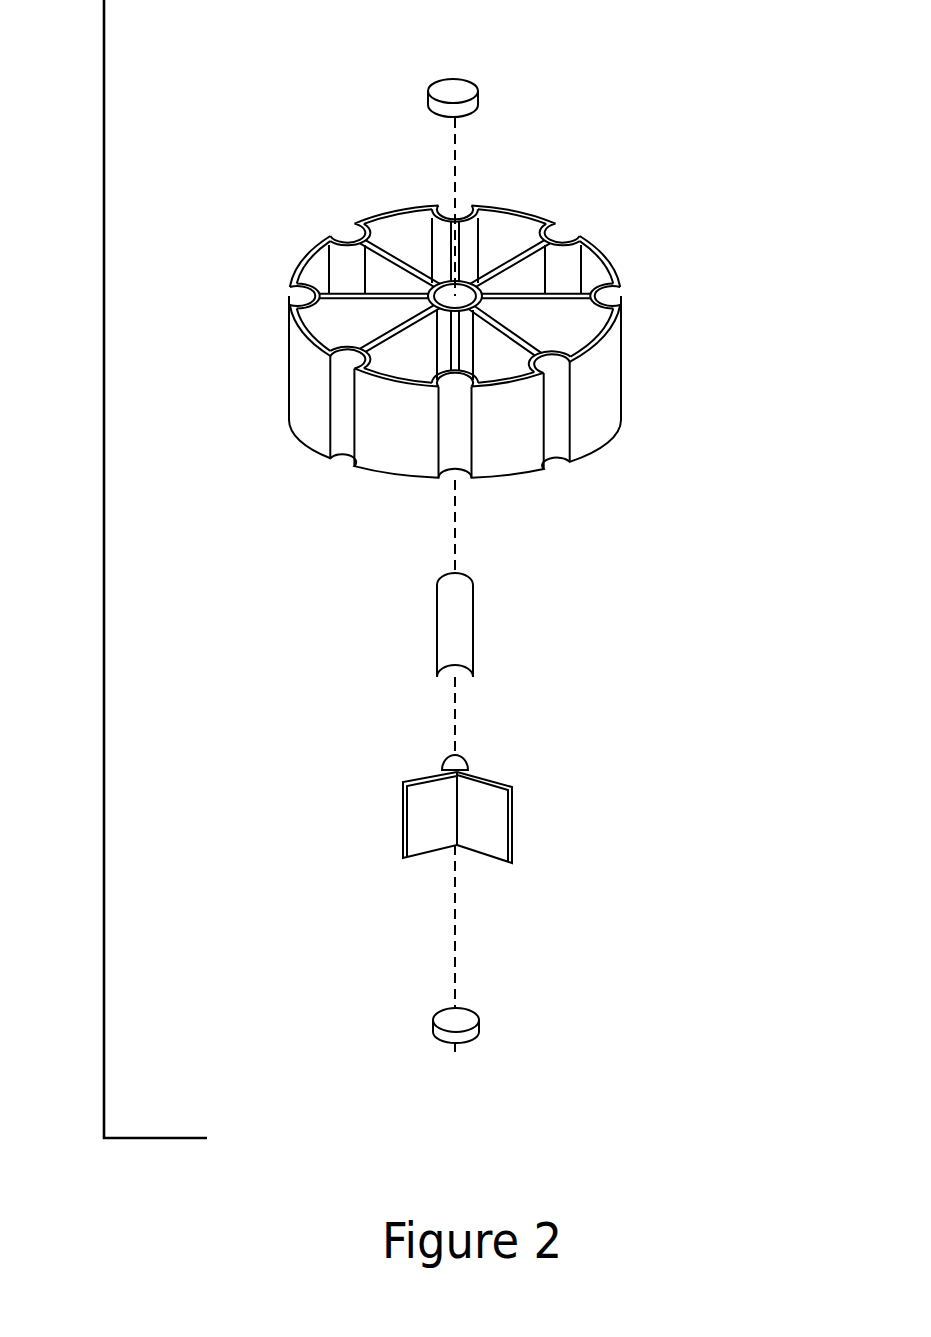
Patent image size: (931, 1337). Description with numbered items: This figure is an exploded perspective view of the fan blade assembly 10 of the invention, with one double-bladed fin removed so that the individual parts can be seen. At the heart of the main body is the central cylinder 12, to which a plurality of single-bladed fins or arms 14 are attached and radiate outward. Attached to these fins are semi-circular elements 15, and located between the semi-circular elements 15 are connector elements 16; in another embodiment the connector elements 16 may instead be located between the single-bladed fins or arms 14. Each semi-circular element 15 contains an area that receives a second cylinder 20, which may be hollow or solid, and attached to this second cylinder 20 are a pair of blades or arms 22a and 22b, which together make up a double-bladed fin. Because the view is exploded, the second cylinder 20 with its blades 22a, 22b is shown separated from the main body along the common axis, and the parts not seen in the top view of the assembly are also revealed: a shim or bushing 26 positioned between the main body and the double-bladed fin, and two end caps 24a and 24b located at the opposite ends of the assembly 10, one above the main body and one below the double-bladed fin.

The fan blade assembly 10 is at (119, 569).
The central cylinder 12 is at (462, 298).
The single-bladed fins or arms 14 is at (537, 272).
The semi-circular elements 15 is at (611, 296).
The connector elements 16 is at (601, 365).
The second cylinder 20 is at (455, 764).
The blade or arm 22a is at (438, 820).
The blade or arm 22b is at (482, 826).
The end cap 24a is at (451, 93).
The end cap 24b is at (455, 1018).
The shim or bushing 26 is at (456, 612).